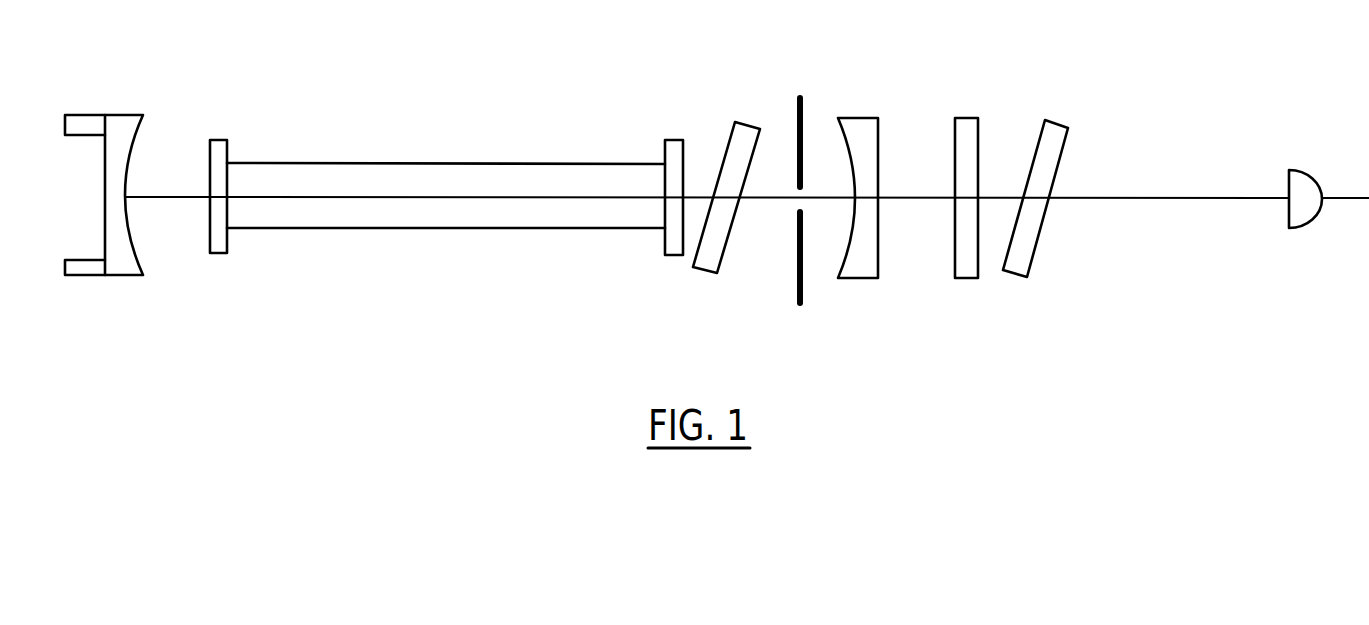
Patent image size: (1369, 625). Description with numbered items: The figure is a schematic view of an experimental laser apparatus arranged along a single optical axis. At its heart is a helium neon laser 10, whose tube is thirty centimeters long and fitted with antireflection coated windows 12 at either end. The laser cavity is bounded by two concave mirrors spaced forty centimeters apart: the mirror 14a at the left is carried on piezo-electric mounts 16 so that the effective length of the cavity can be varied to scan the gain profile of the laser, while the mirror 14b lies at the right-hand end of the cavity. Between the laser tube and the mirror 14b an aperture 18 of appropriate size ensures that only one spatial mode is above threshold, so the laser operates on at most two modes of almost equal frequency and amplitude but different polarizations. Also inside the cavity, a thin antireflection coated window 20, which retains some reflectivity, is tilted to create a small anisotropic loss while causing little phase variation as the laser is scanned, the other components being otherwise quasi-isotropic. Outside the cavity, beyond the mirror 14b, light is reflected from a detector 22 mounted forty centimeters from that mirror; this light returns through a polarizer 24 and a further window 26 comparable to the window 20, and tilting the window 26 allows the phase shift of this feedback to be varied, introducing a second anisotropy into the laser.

The helium neon laser 10 is at (362, 177).
The antireflection coated windows 12 is at (218, 141).
The mirror 14a is at (141, 267).
The mirror 14b is at (839, 278).
The piezo-electric mounts 16 is at (80, 277).
The aperture 18 is at (796, 258).
The antireflection coated window 20 is at (736, 143).
The detector 22 is at (1302, 188).
The polarizer 24 is at (966, 118).
The further window 26 is at (1025, 238).